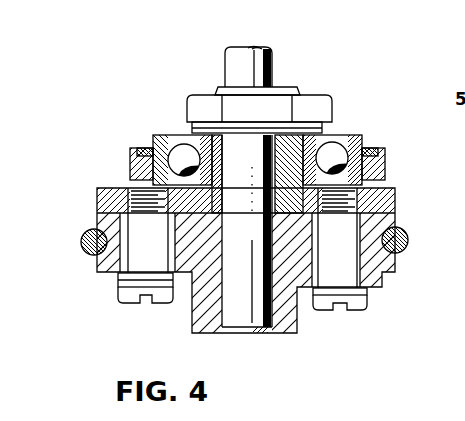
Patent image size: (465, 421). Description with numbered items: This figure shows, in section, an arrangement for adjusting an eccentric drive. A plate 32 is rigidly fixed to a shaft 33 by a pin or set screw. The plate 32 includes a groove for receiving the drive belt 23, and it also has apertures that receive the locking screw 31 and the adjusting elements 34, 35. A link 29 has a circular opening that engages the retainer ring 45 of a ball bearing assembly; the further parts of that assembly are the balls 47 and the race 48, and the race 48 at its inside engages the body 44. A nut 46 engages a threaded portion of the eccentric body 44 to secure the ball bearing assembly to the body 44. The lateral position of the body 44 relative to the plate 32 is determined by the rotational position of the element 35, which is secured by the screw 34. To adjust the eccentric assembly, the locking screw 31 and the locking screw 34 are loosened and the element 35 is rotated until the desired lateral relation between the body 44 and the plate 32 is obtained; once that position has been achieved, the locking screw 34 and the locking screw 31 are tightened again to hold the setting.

The drive belt 23 is at (92, 230).
The link 29 is at (130, 163).
The locking screw 31 is at (121, 300).
The plate 32 is at (106, 268).
The shaft 33 is at (273, 63).
The locking screw 34 is at (354, 311).
The adjusting element 35 is at (372, 284).
The eccentric body 44 is at (392, 190).
The retainer ring 45 is at (349, 137).
The nut 46 is at (322, 98).
The balls 47 is at (364, 146).
The race 48 is at (186, 136).